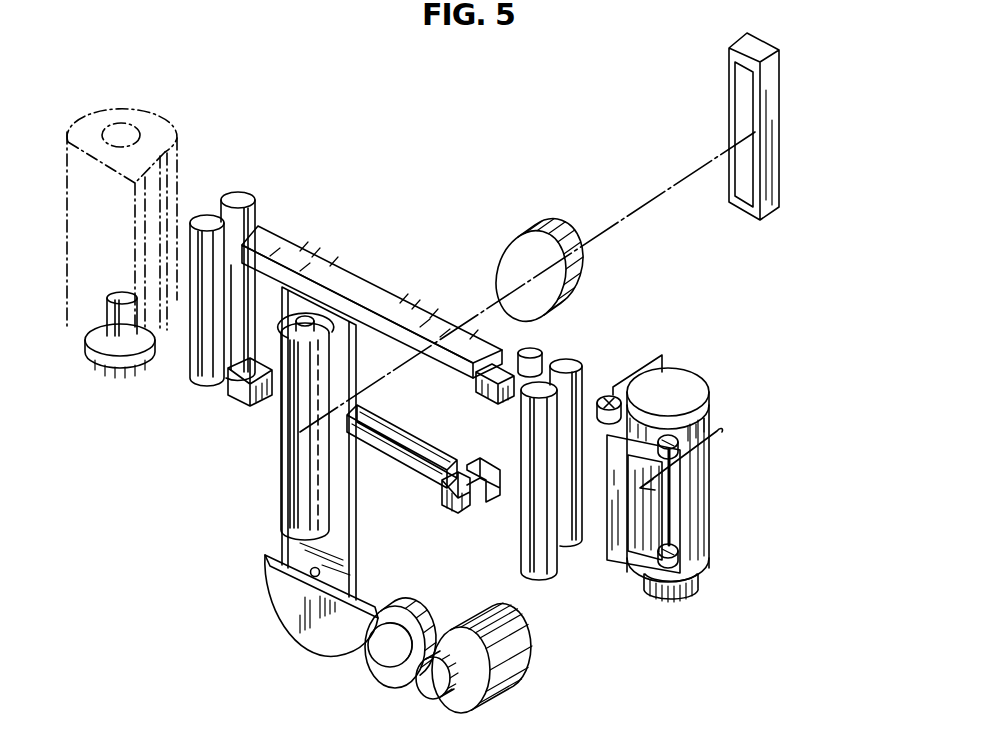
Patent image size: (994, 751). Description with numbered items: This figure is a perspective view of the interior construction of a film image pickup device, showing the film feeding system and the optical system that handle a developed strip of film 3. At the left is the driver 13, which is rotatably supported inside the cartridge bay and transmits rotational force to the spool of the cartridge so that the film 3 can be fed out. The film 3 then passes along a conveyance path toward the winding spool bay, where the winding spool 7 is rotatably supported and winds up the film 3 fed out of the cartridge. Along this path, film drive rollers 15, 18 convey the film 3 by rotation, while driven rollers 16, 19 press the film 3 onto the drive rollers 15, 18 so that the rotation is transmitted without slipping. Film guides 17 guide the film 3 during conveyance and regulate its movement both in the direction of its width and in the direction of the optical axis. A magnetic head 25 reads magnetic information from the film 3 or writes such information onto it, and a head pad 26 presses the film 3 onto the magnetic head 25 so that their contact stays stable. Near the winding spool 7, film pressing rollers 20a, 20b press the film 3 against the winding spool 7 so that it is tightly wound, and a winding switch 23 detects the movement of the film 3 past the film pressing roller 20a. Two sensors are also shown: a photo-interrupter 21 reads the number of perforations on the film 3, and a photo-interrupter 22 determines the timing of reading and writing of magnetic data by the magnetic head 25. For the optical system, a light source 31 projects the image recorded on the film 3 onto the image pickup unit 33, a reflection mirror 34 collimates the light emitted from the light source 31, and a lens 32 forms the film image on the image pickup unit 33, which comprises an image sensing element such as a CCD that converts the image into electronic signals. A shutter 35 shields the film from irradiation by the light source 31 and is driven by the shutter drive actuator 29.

The film 3 is at (510, 483).
The winding spool 7 is at (690, 387).
The driver 13 is at (108, 372).
The film drive roller 15 is at (243, 198).
The driven roller 16 is at (205, 222).
The film guide 17 is at (405, 292).
The film drive roller 18 is at (577, 366).
The driven roller 19 is at (555, 560).
The film pressing roller 20a is at (610, 527).
The film pressing roller 20b is at (618, 390).
The photo-interrupter 21 is at (230, 390).
The photo-interrupter 22 is at (447, 517).
The winding switch 23 is at (660, 510).
The magnetic head 25 is at (473, 390).
The head pad 26 is at (543, 350).
The shutter drive actuator 29 is at (512, 673).
The light source 31 is at (306, 316).
The lens 32 is at (536, 233).
The image pickup unit 33 is at (780, 143).
The reflection mirror 34 is at (290, 497).
The shutter 35 is at (343, 508).